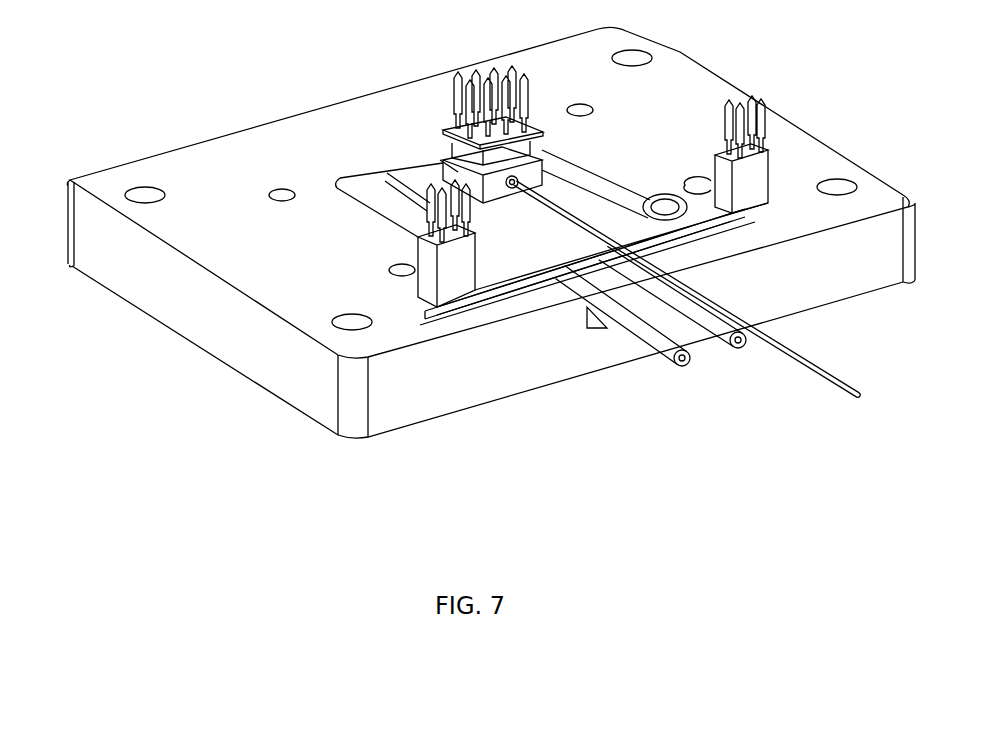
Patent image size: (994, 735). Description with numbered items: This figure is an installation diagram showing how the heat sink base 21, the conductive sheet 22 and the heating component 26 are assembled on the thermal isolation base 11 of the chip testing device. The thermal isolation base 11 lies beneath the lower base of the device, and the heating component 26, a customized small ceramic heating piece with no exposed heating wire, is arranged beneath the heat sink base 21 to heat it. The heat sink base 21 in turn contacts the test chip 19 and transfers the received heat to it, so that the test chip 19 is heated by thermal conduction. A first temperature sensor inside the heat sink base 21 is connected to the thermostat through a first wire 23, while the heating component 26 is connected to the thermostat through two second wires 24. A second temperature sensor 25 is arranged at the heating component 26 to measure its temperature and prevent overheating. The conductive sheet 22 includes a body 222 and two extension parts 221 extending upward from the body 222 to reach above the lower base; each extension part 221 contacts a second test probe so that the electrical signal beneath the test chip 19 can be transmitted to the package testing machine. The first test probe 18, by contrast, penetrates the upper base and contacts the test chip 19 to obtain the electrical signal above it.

The thermal isolation base 11 is at (88, 248).
The first test probe 18 is at (470, 88).
The test chip 19 is at (462, 128).
The heat sink base 21 is at (455, 170).
The conductive sheet 22 is at (650, 294).
The extension part 221 is at (460, 272).
The body 222 is at (520, 233).
The first wire 23 is at (768, 337).
The second wires 24 is at (658, 346).
The second temperature sensor 25 is at (710, 335).
The heating component 26 is at (582, 177).